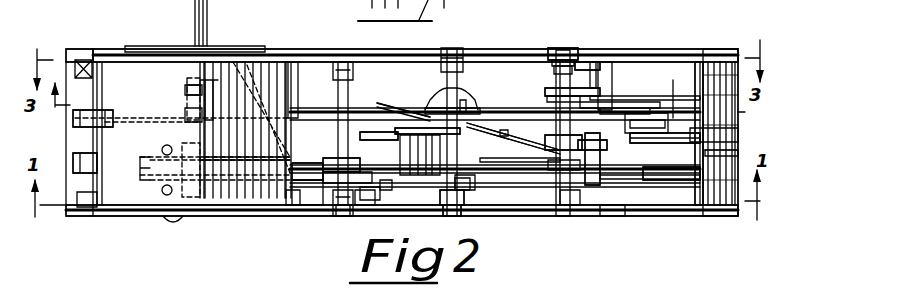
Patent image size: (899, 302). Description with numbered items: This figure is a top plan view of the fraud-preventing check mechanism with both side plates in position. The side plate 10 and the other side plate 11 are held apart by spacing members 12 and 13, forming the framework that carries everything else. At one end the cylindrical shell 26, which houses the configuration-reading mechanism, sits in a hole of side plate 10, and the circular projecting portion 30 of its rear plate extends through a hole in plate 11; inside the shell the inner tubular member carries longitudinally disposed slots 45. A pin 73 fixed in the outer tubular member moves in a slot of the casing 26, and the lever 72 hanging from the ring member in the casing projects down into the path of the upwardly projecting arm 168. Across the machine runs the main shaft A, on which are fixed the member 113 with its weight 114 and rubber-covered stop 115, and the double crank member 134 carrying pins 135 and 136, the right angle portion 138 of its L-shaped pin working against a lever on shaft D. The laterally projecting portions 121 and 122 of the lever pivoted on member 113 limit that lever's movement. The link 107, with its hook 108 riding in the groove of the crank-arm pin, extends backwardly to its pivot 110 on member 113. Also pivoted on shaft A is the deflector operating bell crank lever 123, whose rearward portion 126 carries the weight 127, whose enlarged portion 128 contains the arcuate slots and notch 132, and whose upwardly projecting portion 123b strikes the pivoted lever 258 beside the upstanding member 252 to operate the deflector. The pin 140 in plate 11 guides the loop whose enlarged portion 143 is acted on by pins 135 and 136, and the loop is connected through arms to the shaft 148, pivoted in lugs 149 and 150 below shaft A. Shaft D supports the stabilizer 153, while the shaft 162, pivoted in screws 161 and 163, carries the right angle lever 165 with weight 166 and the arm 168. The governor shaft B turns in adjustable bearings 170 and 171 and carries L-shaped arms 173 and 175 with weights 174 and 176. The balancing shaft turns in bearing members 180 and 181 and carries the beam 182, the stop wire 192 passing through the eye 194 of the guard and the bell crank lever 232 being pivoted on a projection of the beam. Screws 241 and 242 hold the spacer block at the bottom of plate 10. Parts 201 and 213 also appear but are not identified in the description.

The side plate 10 is at (202, 214).
The side plate 11 is at (105, 58).
The spacing member 12 is at (738, 110).
The spacing member 13 is at (80, 82).
The cylindrical shell 26 is at (291, 210).
The circular projecting portion 30 is at (140, 47).
The longitudinally disposed slots 45 is at (207, 12).
The lever 72 is at (188, 92).
The pin 73 is at (176, 125).
The link 107 is at (468, 182).
The hook 108 is at (298, 200).
The pivot 110 is at (575, 172).
The member 113 is at (490, 160).
The weight 114 is at (683, 176).
The stop 115 is at (600, 152).
The laterally projecting portion 121 is at (396, 119).
The laterally projecting portion 122 is at (400, 144).
The deflector operating bell crank lever 123 is at (520, 127).
The upwardly projecting portion 123b is at (378, 101).
The rearward portion 126 is at (625, 129).
The weight 127 is at (738, 138).
The enlarged portion 128 is at (520, 142).
The notch 132 is at (645, 81).
The double crank member 134 is at (545, 94).
The pin 135 is at (586, 75).
The pin 136 is at (594, 66).
The right angle portion 138 is at (580, 60).
The pin 140 is at (583, 37).
The enlarged loop portion 143 is at (545, 88).
The shaft 148 is at (110, 166).
The lug 149 is at (60, 167).
The lug 150 is at (748, 154).
The stabilizer 153 is at (611, 206).
The screw 161 is at (636, 154).
The shaft 162 is at (132, 118).
The screw 163 is at (75, 119).
The right angle lever 165 is at (633, 119).
The weight 166 is at (656, 180).
The upwardly projecting arm 168 is at (190, 80).
The adjustable bearing 170 is at (453, 216).
The adjustable bearing 171 is at (457, 53).
The arm 173 is at (418, 147).
The weight 174 is at (293, 60).
The arm 175 is at (539, 90).
The weight 176 is at (622, 108).
The bearing member 180 is at (357, 203).
The bearing member 181 is at (357, 62).
The beam 182 is at (366, 206).
The stop wire 192 is at (386, 186).
The eye 194 is at (463, 187).
The bracket 201 is at (571, 206).
The lever 213 is at (332, 156).
The bell crank lever 232 is at (292, 158).
The screw 241 is at (173, 218).
The screw 242 is at (367, 222).
The upstanding member 252 is at (330, 141).
The pivoted lever 258 is at (362, 93).
The main shaft A is at (549, 189).
The shaft B is at (456, 96).
The shaft D is at (700, 63).